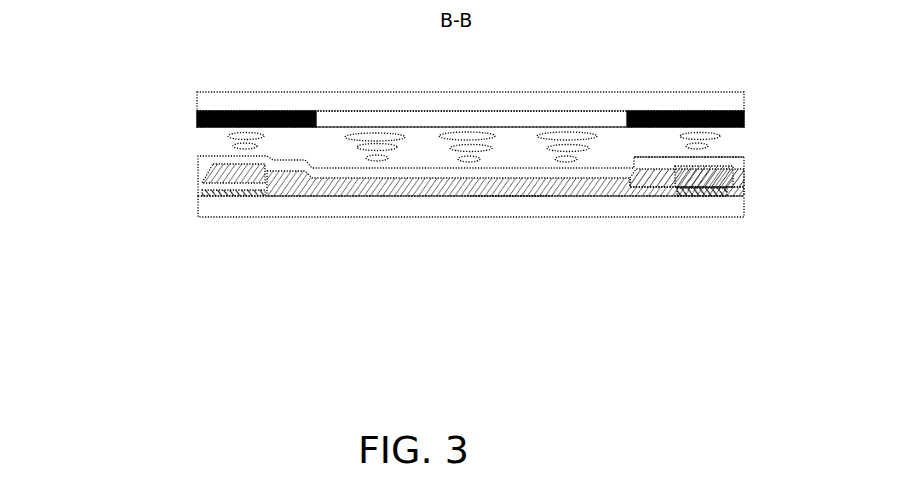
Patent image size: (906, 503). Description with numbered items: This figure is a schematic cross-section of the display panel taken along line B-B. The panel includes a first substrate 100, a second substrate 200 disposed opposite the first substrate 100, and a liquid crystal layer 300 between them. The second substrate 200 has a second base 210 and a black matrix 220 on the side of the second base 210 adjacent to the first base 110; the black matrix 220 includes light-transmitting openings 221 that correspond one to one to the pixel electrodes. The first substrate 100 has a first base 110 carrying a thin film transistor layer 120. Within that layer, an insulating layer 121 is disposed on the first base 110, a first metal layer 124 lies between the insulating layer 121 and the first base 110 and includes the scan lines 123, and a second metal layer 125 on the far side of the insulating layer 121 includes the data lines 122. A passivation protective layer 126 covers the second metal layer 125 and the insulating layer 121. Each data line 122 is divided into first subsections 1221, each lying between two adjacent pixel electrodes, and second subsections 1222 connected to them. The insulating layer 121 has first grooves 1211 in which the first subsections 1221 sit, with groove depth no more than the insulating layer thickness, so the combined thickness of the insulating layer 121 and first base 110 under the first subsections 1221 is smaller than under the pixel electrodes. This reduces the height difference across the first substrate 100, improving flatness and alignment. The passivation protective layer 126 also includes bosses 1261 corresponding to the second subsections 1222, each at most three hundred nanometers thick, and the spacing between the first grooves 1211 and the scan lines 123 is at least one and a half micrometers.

The second substrate 200 is at (103, 75).
The second base 210 is at (197, 97).
The black matrix 220 is at (197, 122).
The light-transmitting opening 221 is at (383, 108).
The liquid crystal layer 300 is at (228, 136).
The first substrate 100 is at (103, 147).
The first base 110 is at (197, 214).
The first metal layer 124 is at (197, 203).
The passivation protective layer 126 is at (197, 163).
The second metal layer 125 is at (206, 177).
The insulating layer 121 is at (206, 194).
The first groove 1211 is at (510, 199).
The thin film transistor layer 120 is at (752, 155).
The data line 122 is at (673, 280).
The first subsection 1221 is at (563, 188).
The second subsection 1222 is at (662, 188).
The scan line 123 is at (701, 197).
The boss 1261 is at (730, 154).